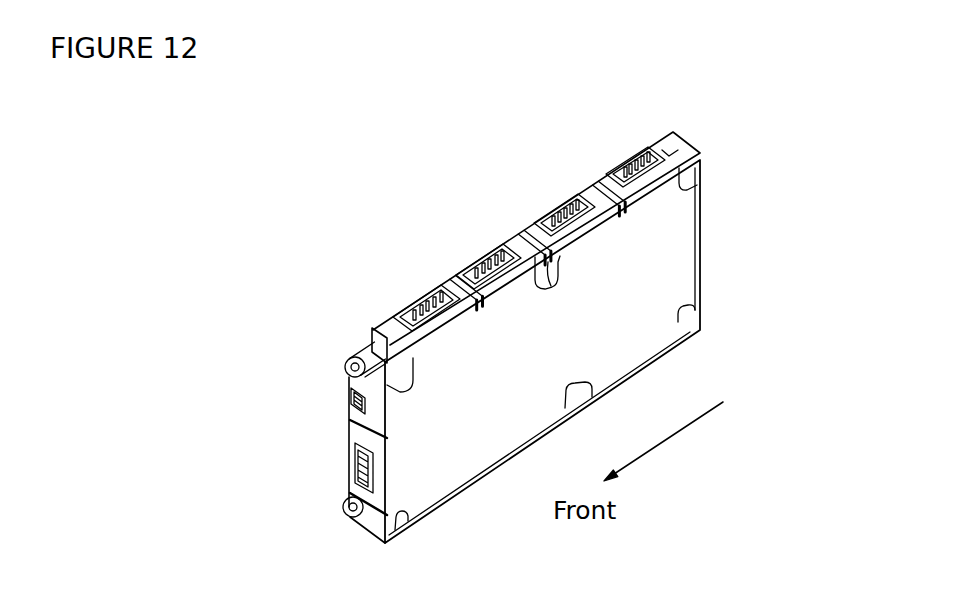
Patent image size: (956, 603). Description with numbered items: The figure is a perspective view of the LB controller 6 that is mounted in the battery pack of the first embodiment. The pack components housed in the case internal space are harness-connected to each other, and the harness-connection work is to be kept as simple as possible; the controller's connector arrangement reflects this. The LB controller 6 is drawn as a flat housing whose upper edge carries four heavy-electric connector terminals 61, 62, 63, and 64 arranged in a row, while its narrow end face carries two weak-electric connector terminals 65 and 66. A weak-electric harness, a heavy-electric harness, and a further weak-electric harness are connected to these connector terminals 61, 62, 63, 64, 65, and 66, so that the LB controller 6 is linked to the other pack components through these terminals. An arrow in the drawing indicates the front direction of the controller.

The LB controller 6 is at (712, 203).
The heavy-electric connector terminal 61 is at (422, 303).
The heavy-electric connector terminal 62 is at (490, 258).
The heavy-electric connector terminal 63 is at (560, 205).
The heavy-electric connector terminal 64 is at (632, 150).
The weak-electric connector terminal 65 is at (351, 401).
The weak-electric connector terminal 66 is at (353, 462).